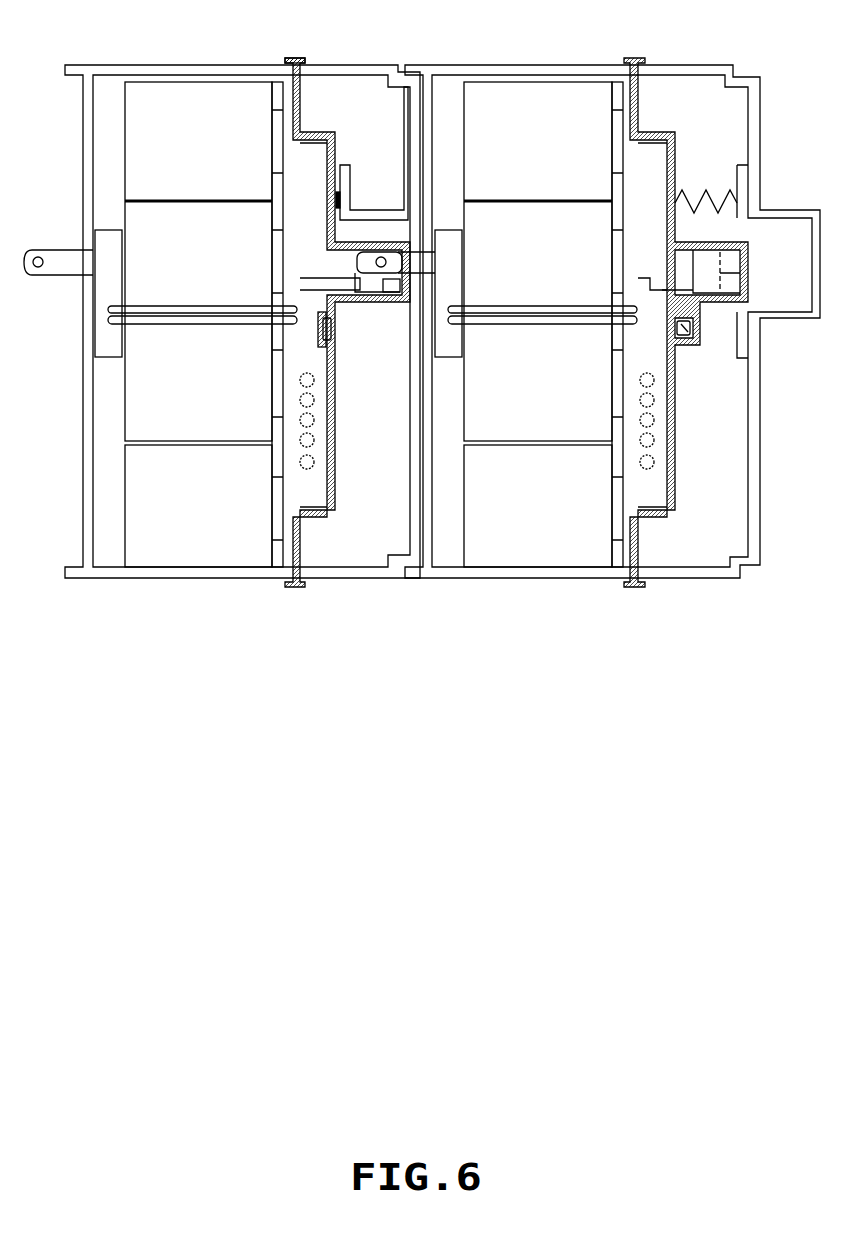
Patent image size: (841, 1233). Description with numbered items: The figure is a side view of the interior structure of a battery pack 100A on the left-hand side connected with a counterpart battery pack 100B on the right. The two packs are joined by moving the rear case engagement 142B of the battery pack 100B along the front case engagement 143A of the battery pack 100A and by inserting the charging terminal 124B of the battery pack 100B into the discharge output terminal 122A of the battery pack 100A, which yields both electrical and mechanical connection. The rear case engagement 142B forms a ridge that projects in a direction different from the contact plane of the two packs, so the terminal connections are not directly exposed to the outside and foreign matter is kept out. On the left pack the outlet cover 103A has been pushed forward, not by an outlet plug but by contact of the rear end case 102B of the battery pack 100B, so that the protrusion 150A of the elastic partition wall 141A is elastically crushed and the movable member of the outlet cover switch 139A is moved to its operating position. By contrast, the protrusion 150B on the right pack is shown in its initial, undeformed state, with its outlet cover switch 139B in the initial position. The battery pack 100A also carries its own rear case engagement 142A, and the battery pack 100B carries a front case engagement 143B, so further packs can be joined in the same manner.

The battery pack 100A is at (202, 625).
The battery pack 100B is at (657, 625).
The rear end case 102B is at (428, 122).
The outlet cover 103A is at (377, 310).
The discharge output terminal 122A is at (360, 277).
The charging terminal 124B is at (392, 263).
The outlet cover switch 139A is at (322, 330).
The outlet cover switch 139B is at (678, 330).
The partition wall 141A is at (288, 55).
The rear case engagement 142A is at (75, 72).
The rear case engagement 142B is at (413, 68).
The front case engagement 143A is at (407, 78).
The front case engagement 143B is at (750, 87).
The protrusion 150A is at (330, 350).
The protrusion 150B is at (702, 328).